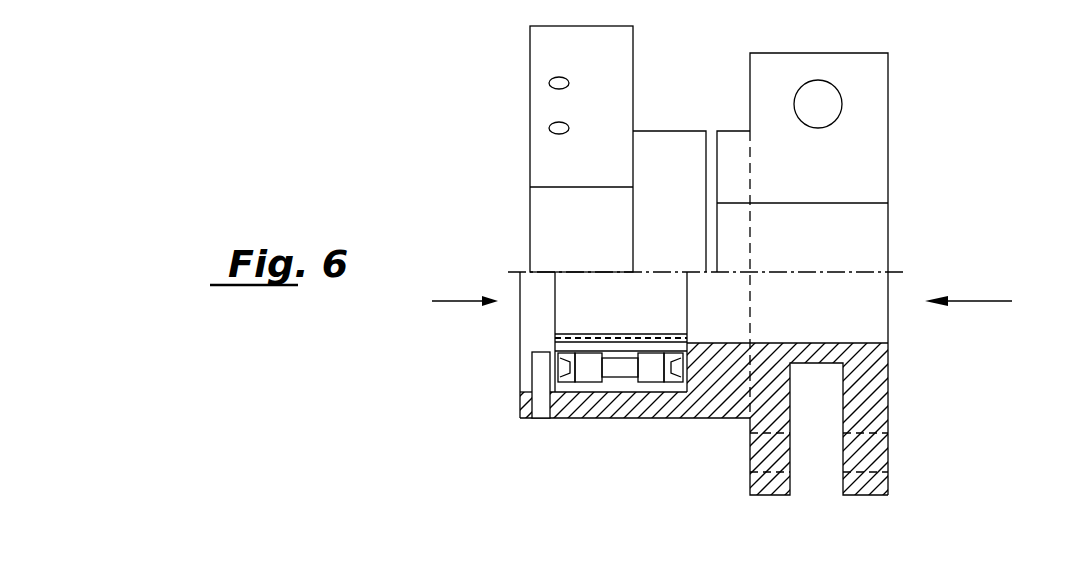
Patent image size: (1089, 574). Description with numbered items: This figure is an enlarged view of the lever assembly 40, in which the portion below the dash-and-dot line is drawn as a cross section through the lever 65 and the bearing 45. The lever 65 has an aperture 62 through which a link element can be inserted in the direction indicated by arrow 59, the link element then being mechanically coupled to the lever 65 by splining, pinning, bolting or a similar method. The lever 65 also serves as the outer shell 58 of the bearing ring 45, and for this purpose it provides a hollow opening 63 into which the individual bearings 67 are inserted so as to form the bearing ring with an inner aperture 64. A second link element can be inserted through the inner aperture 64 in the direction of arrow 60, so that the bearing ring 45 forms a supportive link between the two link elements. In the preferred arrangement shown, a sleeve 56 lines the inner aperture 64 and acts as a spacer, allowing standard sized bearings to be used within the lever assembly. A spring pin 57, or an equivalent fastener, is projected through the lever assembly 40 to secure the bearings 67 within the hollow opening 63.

The lever assembly 40 is at (518, 47).
The bearing ring 45 is at (560, 430).
The sleeve 56 is at (573, 334).
The spring pin 57 is at (542, 413).
The outer shell 58 is at (653, 392).
The arrow 59 is at (990, 298).
The arrow 60 is at (447, 300).
The aperture 62 is at (870, 245).
The hollow opening 63 is at (567, 347).
The inner aperture 64 is at (575, 290).
The lever 65 is at (828, 57).
The bearings 67 is at (593, 378).